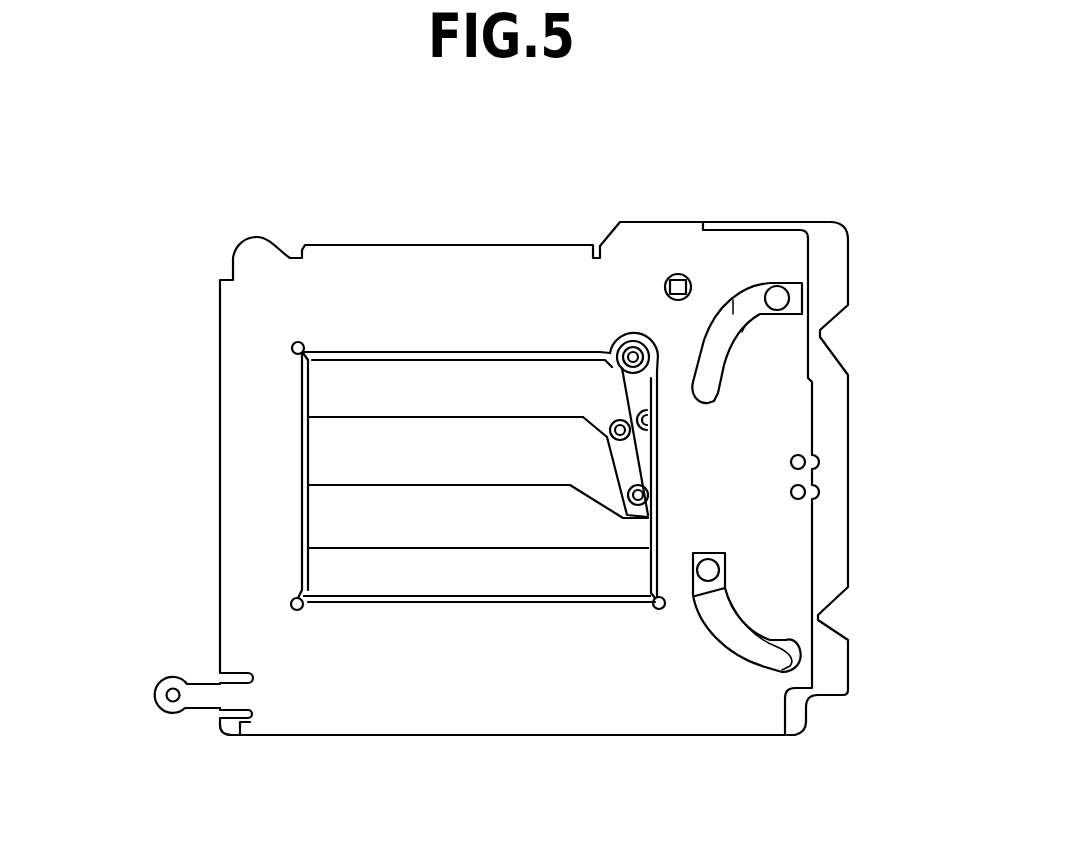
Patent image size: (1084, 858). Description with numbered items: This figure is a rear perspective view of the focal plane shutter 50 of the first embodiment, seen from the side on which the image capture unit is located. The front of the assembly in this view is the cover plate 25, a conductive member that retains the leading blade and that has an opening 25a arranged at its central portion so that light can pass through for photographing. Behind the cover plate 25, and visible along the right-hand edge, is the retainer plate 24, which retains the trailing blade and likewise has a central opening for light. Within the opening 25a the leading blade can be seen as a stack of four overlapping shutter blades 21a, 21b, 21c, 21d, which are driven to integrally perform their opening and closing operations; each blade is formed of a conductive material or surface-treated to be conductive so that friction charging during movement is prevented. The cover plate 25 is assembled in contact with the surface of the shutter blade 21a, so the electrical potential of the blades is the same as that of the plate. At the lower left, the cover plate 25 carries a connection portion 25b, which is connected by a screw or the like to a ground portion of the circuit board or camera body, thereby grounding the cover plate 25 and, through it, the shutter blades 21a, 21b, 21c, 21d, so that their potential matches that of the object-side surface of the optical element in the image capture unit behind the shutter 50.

The focal plane shutter 50 is at (230, 176).
The cover plate 25 is at (665, 240).
The retainer plate 24 is at (828, 248).
The opening 25a is at (470, 595).
The connection portion 25b is at (155, 693).
The shutter blade 21a is at (340, 390).
The shutter blade 21b is at (340, 455).
The shutter blade 21c is at (340, 520).
The shutter blade 21d is at (340, 572).